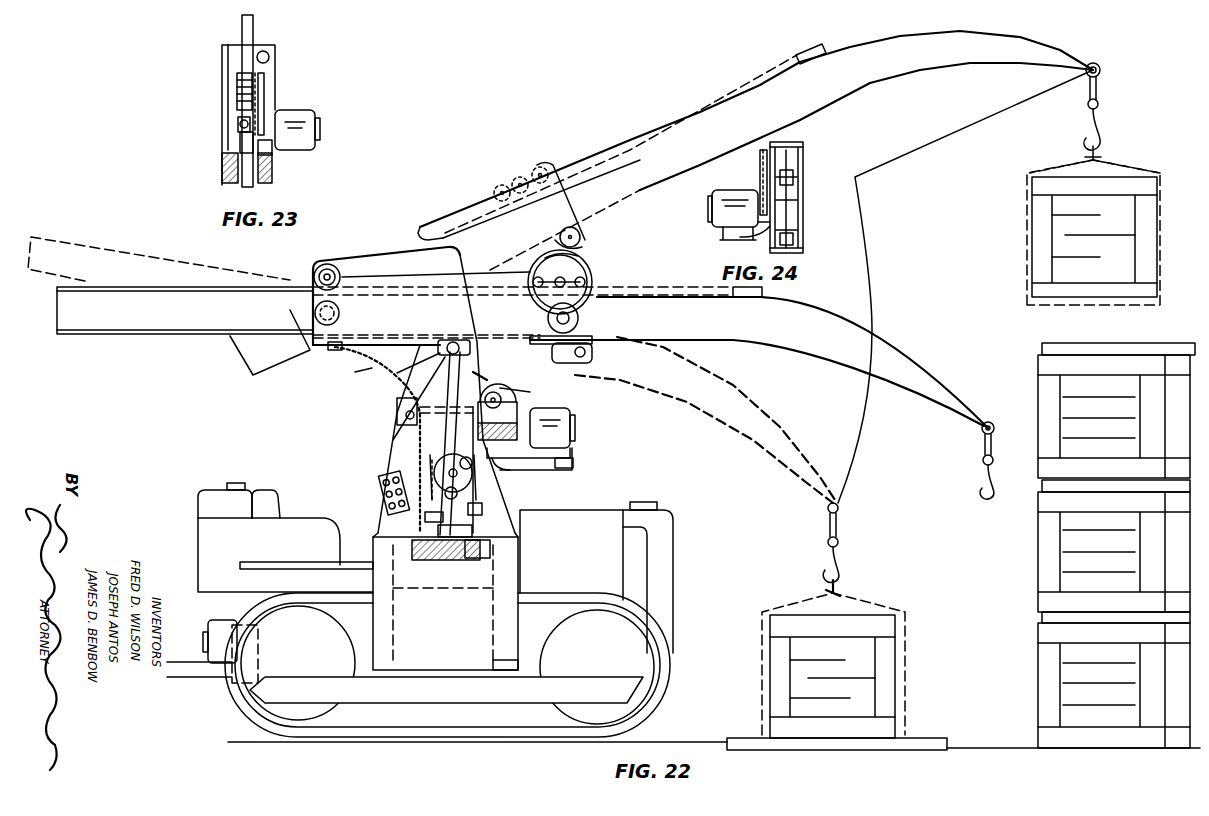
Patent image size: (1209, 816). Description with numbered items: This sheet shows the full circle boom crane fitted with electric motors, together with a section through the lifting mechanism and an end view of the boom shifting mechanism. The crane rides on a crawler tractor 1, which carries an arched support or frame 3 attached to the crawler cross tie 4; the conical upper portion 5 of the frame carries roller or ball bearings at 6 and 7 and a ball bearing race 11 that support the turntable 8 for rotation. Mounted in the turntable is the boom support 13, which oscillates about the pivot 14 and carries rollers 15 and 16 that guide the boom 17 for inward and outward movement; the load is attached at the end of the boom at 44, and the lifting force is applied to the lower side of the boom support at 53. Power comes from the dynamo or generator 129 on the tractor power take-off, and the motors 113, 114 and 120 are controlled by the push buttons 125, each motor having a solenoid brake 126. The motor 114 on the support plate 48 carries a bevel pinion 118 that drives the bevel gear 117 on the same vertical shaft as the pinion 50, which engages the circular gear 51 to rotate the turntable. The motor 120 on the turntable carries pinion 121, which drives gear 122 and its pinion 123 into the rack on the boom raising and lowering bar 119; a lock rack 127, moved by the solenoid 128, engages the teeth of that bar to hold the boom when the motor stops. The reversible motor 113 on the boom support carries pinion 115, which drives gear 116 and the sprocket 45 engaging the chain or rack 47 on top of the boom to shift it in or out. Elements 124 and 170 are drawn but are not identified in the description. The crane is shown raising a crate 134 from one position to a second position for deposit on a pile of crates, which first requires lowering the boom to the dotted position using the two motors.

In FIG. 22, the crawler tractor 1 is at (660, 632).
In FIG. 22, the arched support or frame 3 is at (519, 615).
In FIG. 22, the crawler cross tie 4 is at (508, 658).
In FIG. 22, the upper portion of the arch support (turntable support) 5 is at (375, 530).
In FIG. 22, the roller or ball bearing 6 is at (420, 432).
In FIG. 22, the roller or ball bearing 7 is at (482, 556).
In FIG. 22, the turntable 8 is at (395, 380).
In FIG. 23, the turntable 8 is at (222, 52).
In FIG. 22, the ball bearing race 11 is at (397, 418).
In FIG. 22, the boom support 13 is at (503, 178).
In FIG. 24, the boom support 13 is at (800, 142).
In FIG. 22, the pivot 14 is at (298, 288).
In FIG. 22, the roller 15 is at (334, 268).
In FIG. 22, the roller 16 is at (560, 234).
In FIG. 24, the roller 16 is at (800, 225).
In FIG. 22, the boom 17 is at (852, 54).
In FIG. 24, the boom 17 is at (796, 208).
In FIG. 22, the load attachment point at end of boom 44 is at (1087, 63).
In FIG. 22, the sprocket or pinion 45 is at (522, 178).
In FIG. 24, the sprocket or pinion 45 is at (792, 170).
In FIG. 22, the sprocket chain or rack 47 is at (694, 110).
In FIG. 22, the support plate 48 is at (572, 452).
In FIG. 22, the pinion 50 is at (500, 394).
In FIG. 22, the circular gear 51 is at (490, 392).
In FIG. 22, the contact point on lower side of boom support 53 is at (362, 358).
In FIG. 22, the reversible motor 113 is at (598, 344).
In FIG. 24, the reversible motor 113 is at (728, 195).
In FIG. 22, the motor 114 is at (573, 412).
In FIG. 22, the pinion 115 is at (532, 391).
In FIG. 24, the pinion 115 is at (740, 237).
In FIG. 22, the gear 116 is at (585, 258).
In FIG. 24, the gear 116 is at (760, 160).
In FIG. 22, the bevel gear 117 is at (575, 463).
In FIG. 22, the bevel pinion 118 is at (520, 412).
In FIG. 22, the boom raising and lowering bar 119 is at (420, 395).
In FIG. 23, the boom raising and lowering bar 119 is at (242, 28).
In FIG. 22, the motor 120 is at (485, 548).
In FIG. 23, the motor 120 is at (300, 110).
In FIG. 22, the pinion 121 is at (472, 531).
In FIG. 23, the pinion 121 is at (268, 157).
In FIG. 22, the gear 122 is at (472, 475).
In FIG. 23, the gear 122 is at (266, 82).
In FIG. 22, the pinion 123 is at (472, 463).
In FIG. 23, the pinion 123 is at (237, 88).
In FIG. 22, the collar 124 is at (424, 518).
In FIG. 23, the collar 124 is at (240, 142).
In FIG. 22, the push buttons (switch) 125 is at (384, 492).
In FIG. 22, the solenoid brake 126 is at (576, 305).
In FIG. 23, the solenoid brake 126 is at (269, 55).
In FIG. 22, the lock rack 127 is at (482, 510).
In FIG. 22, the solenoid 128 is at (458, 493).
In FIG. 23, the solenoid 128 is at (240, 124).
In FIG. 22, the dynamo or generator 129 is at (212, 620).
In FIG. 22, the crate 134 is at (961, 449).
In FIG. 22, the plate 170 is at (358, 378).